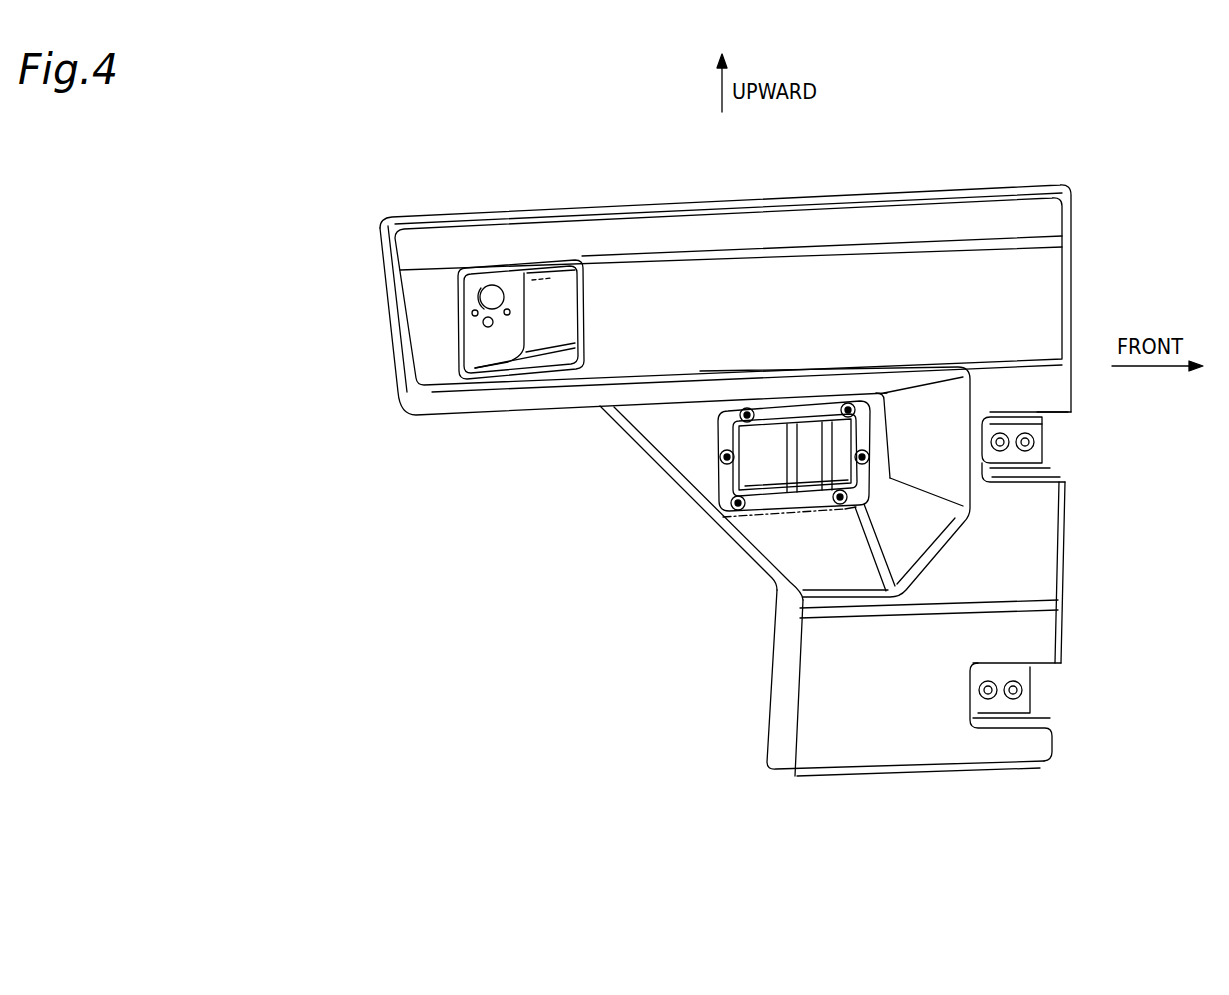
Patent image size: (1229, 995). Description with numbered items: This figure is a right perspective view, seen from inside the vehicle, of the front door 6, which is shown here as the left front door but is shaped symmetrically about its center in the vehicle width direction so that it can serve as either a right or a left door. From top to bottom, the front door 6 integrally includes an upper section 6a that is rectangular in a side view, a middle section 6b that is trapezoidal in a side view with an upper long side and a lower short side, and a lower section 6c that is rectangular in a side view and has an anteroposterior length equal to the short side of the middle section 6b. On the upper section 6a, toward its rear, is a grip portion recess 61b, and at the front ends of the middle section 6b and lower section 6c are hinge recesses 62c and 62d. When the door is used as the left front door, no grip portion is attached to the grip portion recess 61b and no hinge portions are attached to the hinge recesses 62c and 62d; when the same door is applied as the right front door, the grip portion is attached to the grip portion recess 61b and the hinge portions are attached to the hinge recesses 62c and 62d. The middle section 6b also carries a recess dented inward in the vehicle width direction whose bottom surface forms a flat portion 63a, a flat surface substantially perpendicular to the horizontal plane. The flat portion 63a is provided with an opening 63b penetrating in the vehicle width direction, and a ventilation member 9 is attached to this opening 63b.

The front door 6 is at (1013, 157).
The upper section 6a is at (815, 277).
The middle section 6b is at (913, 532).
The lower section 6c is at (893, 712).
The grip portion recess 61b is at (496, 293).
The hinge recess 62c is at (1042, 441).
The hinge recess 62d is at (1035, 690).
The flat portion 63a is at (680, 434).
The opening 63b is at (718, 478).
The ventilation member 9 is at (783, 503).